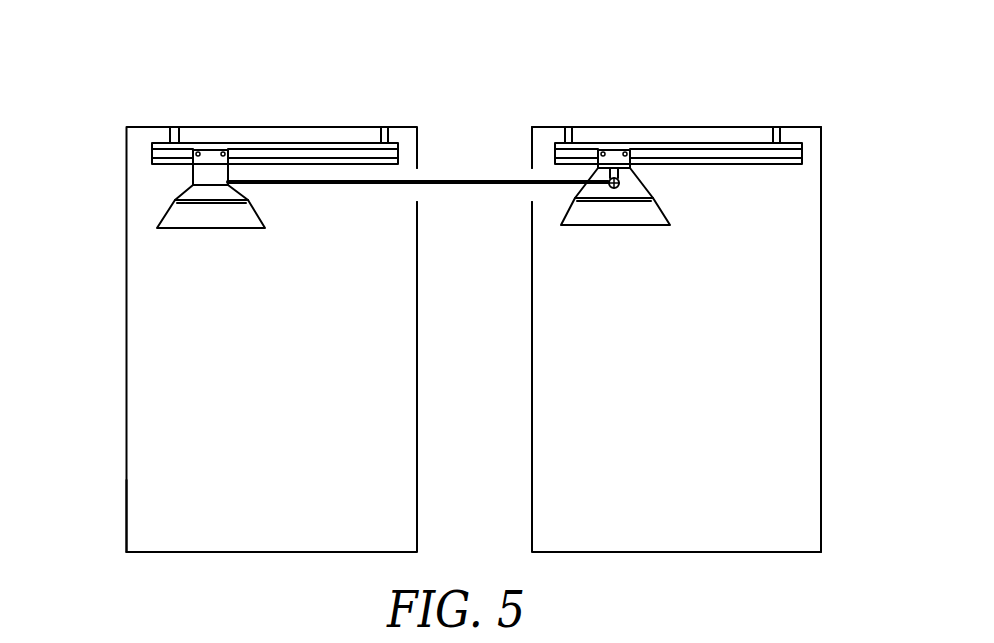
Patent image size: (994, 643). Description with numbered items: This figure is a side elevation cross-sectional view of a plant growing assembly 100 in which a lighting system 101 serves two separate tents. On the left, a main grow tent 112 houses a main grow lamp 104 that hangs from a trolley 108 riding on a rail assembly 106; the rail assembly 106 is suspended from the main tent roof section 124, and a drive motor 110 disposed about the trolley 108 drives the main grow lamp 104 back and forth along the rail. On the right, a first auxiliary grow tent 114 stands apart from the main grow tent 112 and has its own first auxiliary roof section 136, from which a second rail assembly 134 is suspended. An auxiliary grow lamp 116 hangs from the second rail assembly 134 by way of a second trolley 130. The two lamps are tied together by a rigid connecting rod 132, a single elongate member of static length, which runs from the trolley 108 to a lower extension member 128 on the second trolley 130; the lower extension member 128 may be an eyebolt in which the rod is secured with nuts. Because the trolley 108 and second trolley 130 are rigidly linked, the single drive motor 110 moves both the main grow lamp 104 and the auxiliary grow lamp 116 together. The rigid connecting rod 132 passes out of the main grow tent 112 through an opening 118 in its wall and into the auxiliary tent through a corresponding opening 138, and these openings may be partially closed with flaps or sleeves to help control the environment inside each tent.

The plant growing assembly 100 is at (829, 57).
The lighting system 101 is at (731, 132).
The main grow lamp 104 is at (173, 217).
The rail assembly 106 is at (165, 153).
The trolley 108 is at (274, 119).
The drive motor 110 is at (212, 165).
The main grow tent 112 is at (125, 513).
The first auxiliary grow tent 114 is at (821, 513).
The auxiliary grow lamp 116 is at (647, 210).
The opening 118 is at (419, 194).
The main tent roof section 124 is at (112, 137).
The lower extension member 128 is at (630, 168).
The second trolley 130 is at (610, 150).
The rigid connecting rod 132 is at (450, 177).
The second rail assembly 134 is at (587, 152).
The first auxiliary roof section 136 is at (832, 142).
The opening 138 is at (528, 194).